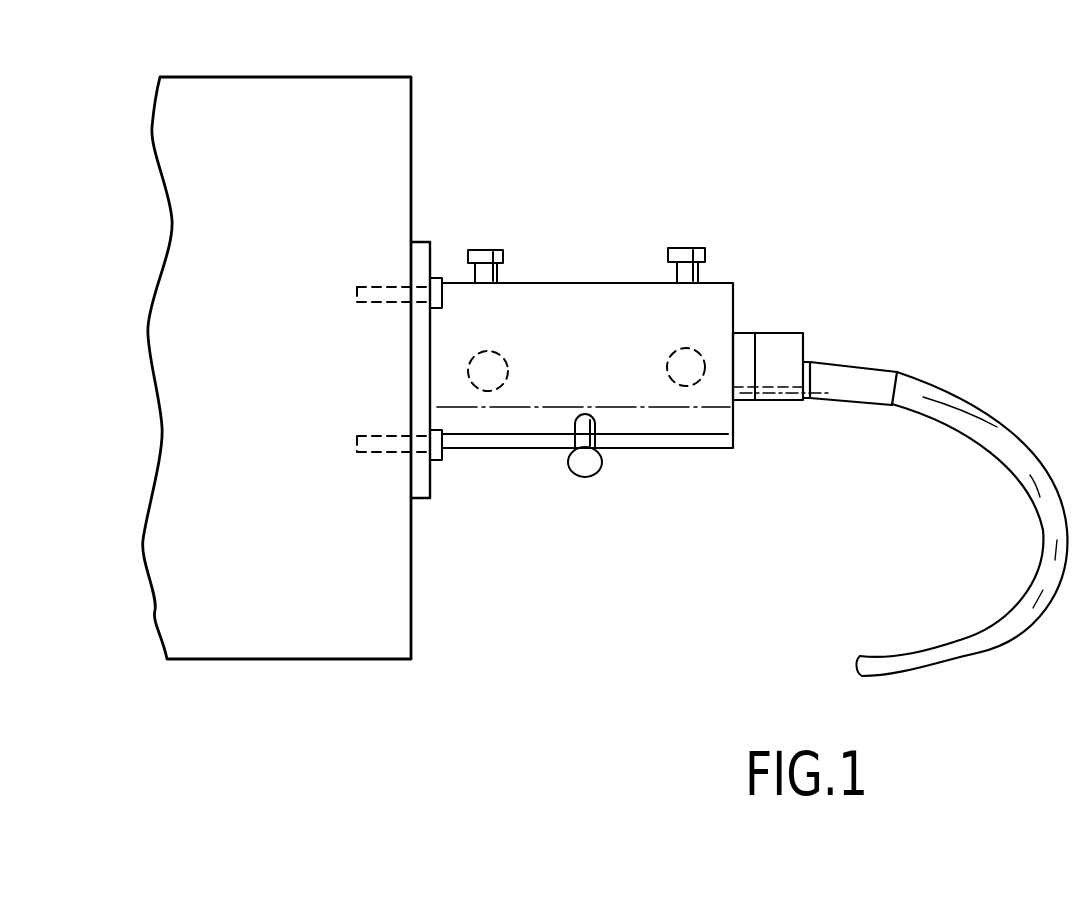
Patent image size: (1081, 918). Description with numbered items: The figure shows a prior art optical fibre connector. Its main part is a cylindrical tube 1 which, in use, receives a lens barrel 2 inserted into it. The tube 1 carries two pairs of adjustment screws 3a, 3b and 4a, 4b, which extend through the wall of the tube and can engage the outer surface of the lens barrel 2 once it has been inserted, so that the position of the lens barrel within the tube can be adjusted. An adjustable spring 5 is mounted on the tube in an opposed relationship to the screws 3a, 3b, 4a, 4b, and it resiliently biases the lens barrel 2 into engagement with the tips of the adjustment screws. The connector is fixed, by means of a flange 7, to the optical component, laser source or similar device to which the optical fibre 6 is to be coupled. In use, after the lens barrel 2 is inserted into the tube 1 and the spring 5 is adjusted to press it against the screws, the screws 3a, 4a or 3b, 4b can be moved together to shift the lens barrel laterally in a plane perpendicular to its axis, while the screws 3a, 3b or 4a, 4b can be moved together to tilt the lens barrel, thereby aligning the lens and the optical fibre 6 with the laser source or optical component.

The cylindrical tube 1 is at (510, 427).
The lens barrel 2 is at (777, 392).
The adjustment screw 3a is at (490, 250).
The adjustment screw 3b is at (500, 355).
The adjustment screw 4a is at (700, 248).
The adjustment screw 4b is at (670, 350).
The adjustable spring 5 is at (597, 468).
The optical fibre 6 is at (997, 427).
The flange 7 is at (432, 485).